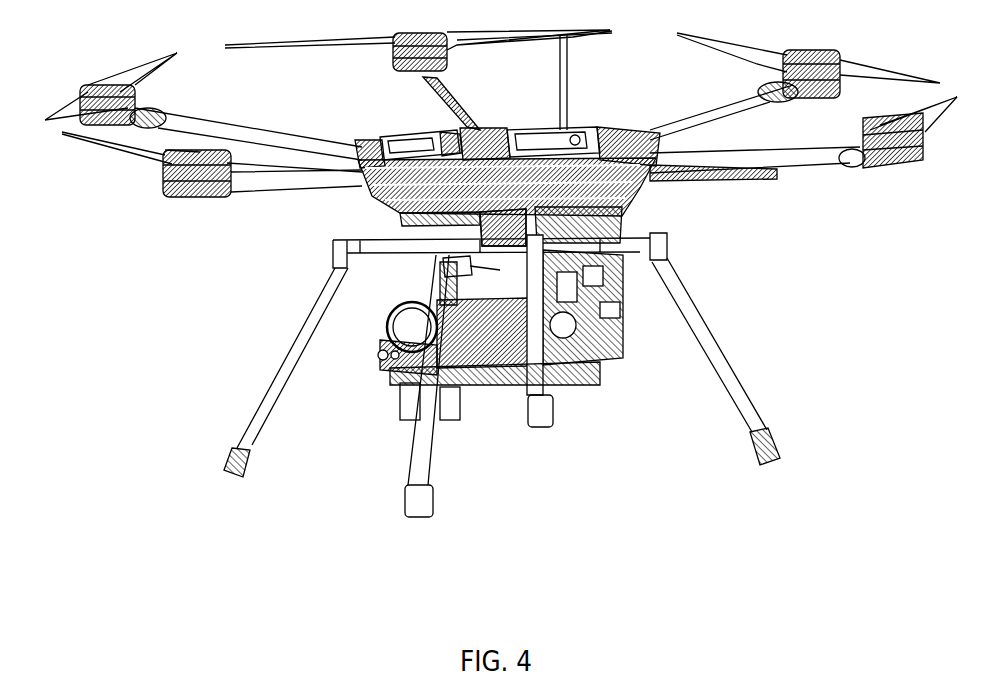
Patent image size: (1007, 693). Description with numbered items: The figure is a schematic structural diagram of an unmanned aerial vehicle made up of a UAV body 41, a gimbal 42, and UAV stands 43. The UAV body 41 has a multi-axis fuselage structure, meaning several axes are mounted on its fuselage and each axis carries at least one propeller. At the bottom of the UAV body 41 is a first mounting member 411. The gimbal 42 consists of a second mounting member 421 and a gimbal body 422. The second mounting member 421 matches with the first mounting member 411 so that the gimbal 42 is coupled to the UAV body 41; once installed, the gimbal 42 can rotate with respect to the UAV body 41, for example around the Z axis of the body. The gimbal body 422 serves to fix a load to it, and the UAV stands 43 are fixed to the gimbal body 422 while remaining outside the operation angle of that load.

The UAV body 41 is at (632, 197).
The first mounting member 411 is at (465, 212).
The gimbal 42 is at (441, 398).
The second mounting member 421 is at (448, 273).
The gimbal body 422 is at (505, 386).
The UAV stands 43 is at (300, 307).